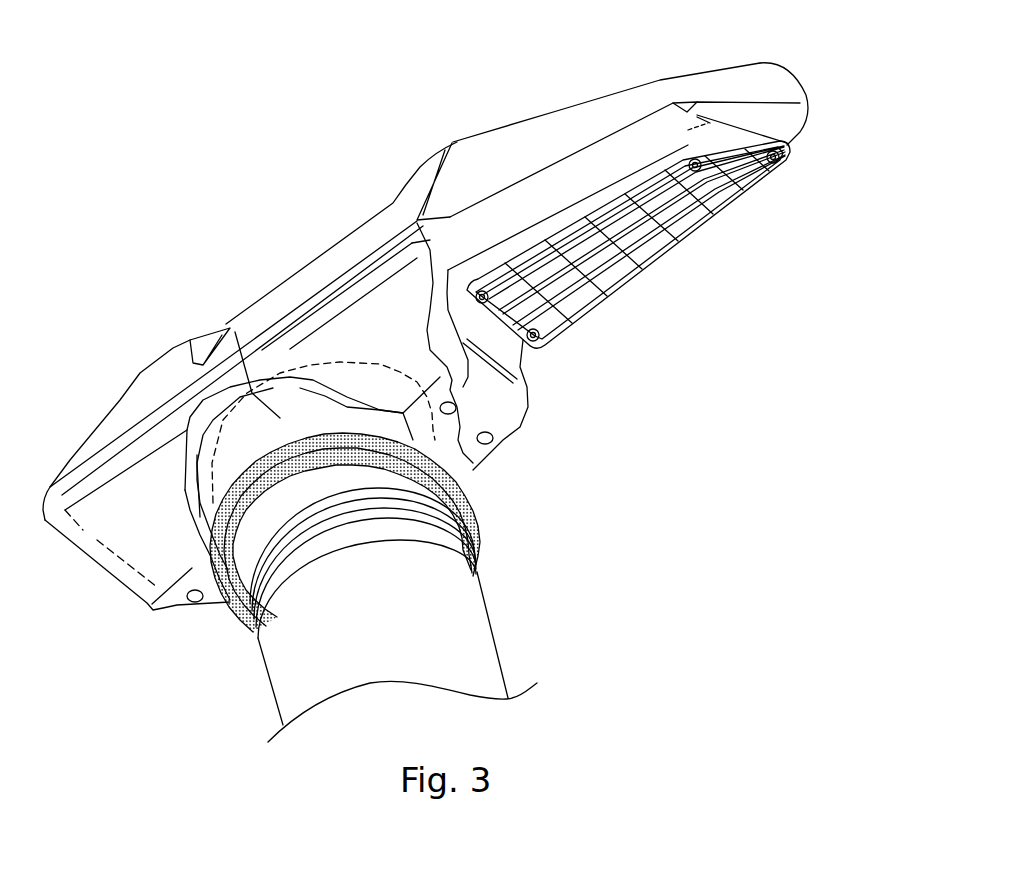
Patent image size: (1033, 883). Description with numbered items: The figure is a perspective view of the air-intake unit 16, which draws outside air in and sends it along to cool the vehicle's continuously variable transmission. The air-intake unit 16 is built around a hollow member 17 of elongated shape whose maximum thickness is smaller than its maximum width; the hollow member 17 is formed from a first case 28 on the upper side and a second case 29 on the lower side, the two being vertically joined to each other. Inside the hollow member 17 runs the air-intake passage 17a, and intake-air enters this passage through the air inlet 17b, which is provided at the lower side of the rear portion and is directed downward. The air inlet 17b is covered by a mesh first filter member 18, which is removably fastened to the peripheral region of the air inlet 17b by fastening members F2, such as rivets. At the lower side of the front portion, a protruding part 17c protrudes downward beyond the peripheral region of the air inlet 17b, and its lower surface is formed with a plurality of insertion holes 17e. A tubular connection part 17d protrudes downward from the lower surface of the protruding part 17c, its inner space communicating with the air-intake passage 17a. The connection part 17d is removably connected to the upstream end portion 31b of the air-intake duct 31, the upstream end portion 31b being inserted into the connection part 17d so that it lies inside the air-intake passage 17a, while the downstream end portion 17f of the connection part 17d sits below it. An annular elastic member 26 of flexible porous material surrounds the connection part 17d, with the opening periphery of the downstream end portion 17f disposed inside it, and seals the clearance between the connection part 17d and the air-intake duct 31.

The air-intake unit 16 is at (342, 254).
The hollow member 17 is at (548, 131).
The air-intake passage 17a is at (130, 417).
The air inlet 17b is at (703, 225).
The protruding part 17c is at (480, 478).
The connection part 17d is at (235, 332).
The insertion holes 17e is at (527, 408).
The downstream end portion 17f is at (185, 400).
The first filter member 18 is at (538, 340).
The elastic member 26 is at (480, 527).
The first case 28 is at (770, 83).
The second case 29 is at (795, 123).
The air-intake duct 31 is at (477, 630).
The upstream end portion 31b is at (293, 357).
The fastening members F2 is at (780, 160).